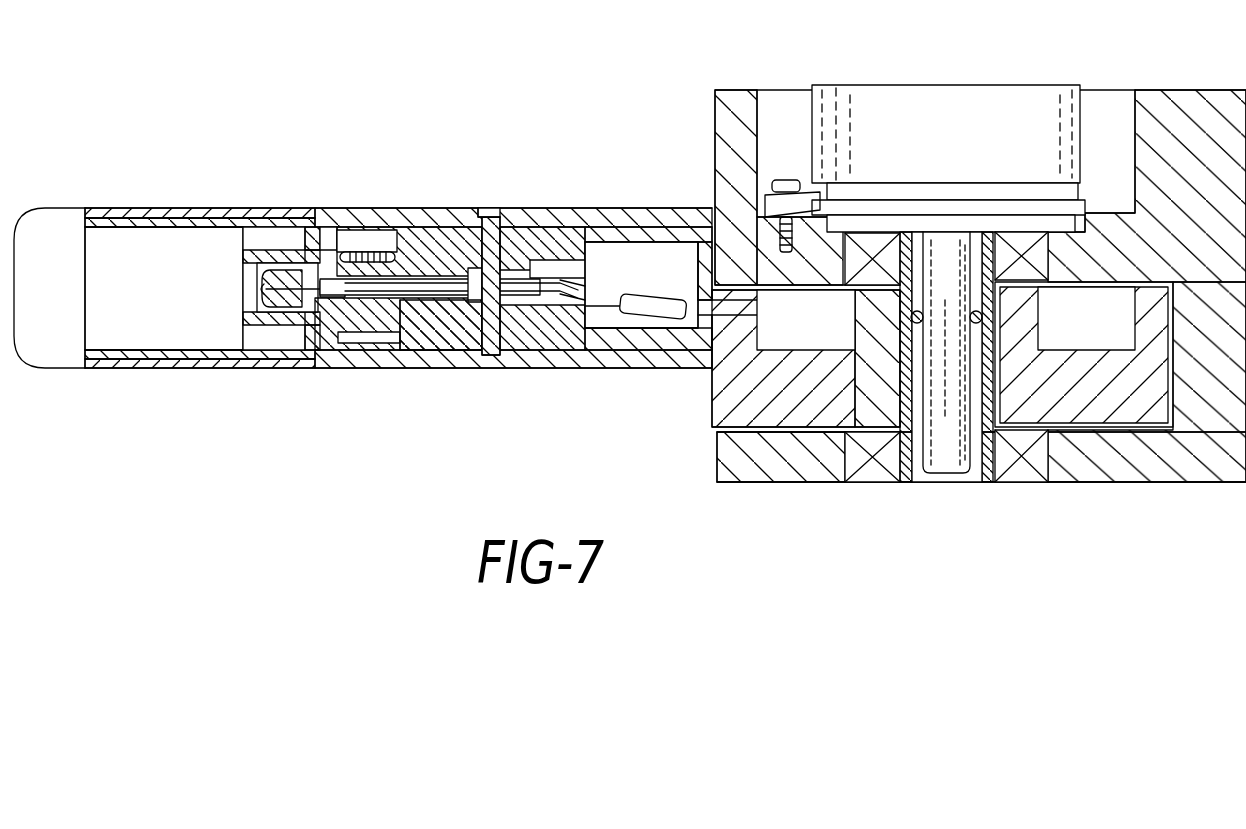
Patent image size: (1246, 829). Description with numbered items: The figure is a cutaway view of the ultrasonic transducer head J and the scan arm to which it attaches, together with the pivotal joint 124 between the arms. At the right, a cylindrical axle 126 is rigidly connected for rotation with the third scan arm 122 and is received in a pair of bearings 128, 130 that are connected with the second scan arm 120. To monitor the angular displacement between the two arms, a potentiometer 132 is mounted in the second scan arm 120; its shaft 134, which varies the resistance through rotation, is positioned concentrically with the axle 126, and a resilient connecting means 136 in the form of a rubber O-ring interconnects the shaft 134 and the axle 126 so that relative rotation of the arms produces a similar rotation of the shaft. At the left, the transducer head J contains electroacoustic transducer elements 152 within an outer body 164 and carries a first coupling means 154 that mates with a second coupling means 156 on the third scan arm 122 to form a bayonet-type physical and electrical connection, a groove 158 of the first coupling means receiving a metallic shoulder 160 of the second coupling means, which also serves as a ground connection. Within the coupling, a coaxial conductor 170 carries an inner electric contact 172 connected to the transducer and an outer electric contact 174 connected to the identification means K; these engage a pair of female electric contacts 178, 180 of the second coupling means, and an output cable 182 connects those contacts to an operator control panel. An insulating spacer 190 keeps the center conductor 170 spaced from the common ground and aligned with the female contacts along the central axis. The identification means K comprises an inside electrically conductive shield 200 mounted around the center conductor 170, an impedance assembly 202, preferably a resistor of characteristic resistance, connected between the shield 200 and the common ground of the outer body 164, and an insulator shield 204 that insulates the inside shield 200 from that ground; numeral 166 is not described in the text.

The second scan arm 120 is at (1150, 87).
The third scan arm 122 is at (625, 338).
The pivotal joint 124 is at (918, 502).
The cylindrical axle 126 is at (887, 458).
The bearing 128 is at (1040, 258).
The bearing 130 is at (1025, 462).
The potentiometer 132 is at (985, 96).
The shaft 134 is at (940, 470).
The resilient connecting means 136 is at (912, 317).
The electroacoustic transducer elements 152 is at (118, 236).
The first coupling means 154 is at (467, 188).
The second coupling means 156 is at (490, 182).
The groove 158 is at (480, 222).
The shoulder 160 is at (495, 222).
The outer body 164 is at (140, 360).
The bottom wall 166 is at (560, 355).
The coaxial conductor 170 is at (415, 284).
The inner electric contact 172 is at (588, 270).
The outer electric contact 174 is at (542, 228).
The female electric contact 178 is at (578, 294).
The female electric contact 180 is at (505, 340).
The output cable 182 is at (650, 320).
The spacer 190 is at (455, 322).
The inside electrically conductive shield 200 is at (300, 320).
The impedance assembly 202 is at (370, 254).
The insulator shield 204 is at (207, 356).
The transducer head J is at (340, 384).
The identification means K is at (329, 214).